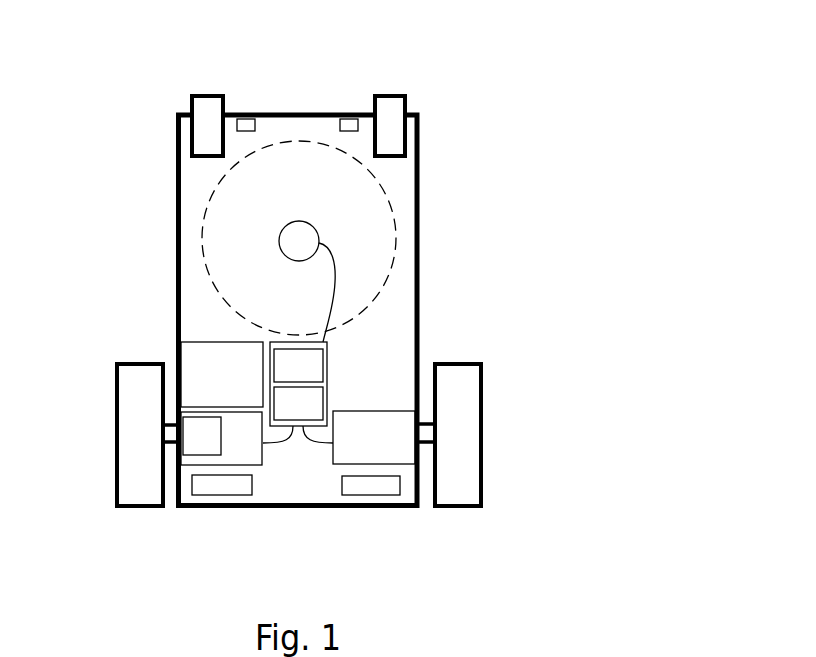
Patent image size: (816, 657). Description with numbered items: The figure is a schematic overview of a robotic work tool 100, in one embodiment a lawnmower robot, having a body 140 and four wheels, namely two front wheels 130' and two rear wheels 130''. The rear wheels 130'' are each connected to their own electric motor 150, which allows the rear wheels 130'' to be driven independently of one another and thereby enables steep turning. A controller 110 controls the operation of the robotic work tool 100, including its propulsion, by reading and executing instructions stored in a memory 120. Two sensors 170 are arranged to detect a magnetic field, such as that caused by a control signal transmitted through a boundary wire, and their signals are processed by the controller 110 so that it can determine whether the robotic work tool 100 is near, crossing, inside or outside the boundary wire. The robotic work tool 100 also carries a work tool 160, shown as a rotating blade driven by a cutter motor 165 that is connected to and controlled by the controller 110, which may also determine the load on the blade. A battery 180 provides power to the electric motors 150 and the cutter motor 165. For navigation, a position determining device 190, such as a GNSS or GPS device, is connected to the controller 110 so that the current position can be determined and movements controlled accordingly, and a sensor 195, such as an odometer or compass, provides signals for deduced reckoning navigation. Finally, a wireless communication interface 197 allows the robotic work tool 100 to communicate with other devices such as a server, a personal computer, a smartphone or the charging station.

The robotic work tool 100 is at (162, 149).
The controller 110 is at (327, 363).
The memory 120 is at (327, 407).
The front wheels 130' is at (356, 152).
The rear wheels 130'' is at (261, 480).
The body 140 is at (189, 508).
The electric motor 150 is at (333, 450).
The work tool 160 is at (208, 282).
The cutter motor 165 is at (280, 247).
The sensor 170 is at (327, 115).
The battery 180 is at (193, 365).
The position determining device 190 is at (355, 496).
The deduced reckoning navigation sensor 195 is at (198, 456).
The wireless communication interface 197 is at (193, 482).